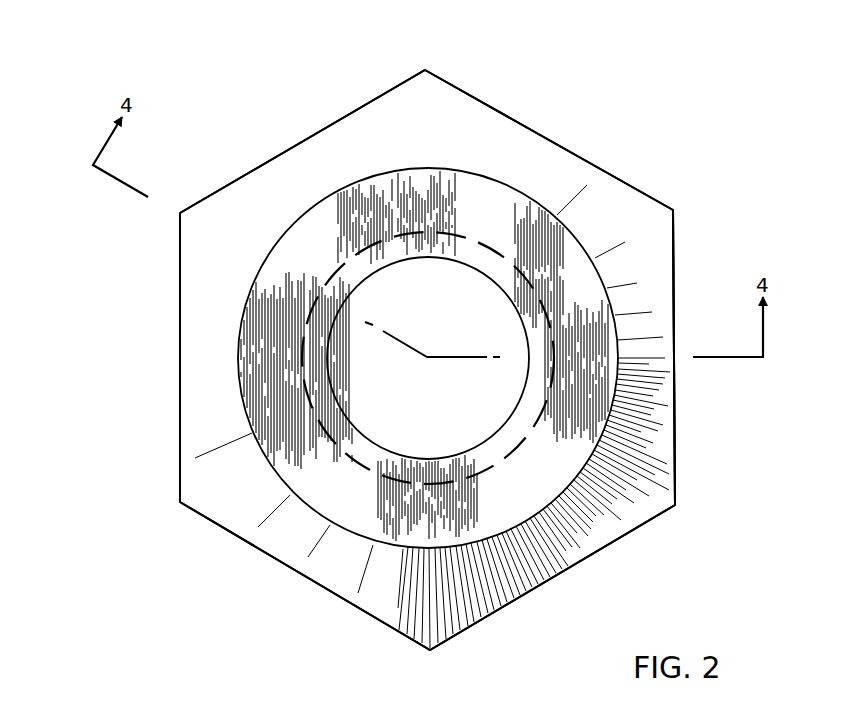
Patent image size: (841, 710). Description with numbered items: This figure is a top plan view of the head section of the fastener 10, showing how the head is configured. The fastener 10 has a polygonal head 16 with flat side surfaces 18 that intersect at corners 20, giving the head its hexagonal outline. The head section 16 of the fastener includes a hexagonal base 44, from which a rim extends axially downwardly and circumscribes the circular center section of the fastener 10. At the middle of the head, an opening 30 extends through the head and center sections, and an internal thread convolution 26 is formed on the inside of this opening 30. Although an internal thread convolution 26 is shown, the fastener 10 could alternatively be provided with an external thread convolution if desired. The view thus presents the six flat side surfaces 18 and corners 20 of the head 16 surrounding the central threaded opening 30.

The fastener 10 is at (672, 106).
The polygonal head 16 is at (665, 198).
The flat side surfaces 18 is at (318, 125).
The corners 20 is at (425, 70).
The internal thread convolution 26 is at (340, 405).
The opening 30 is at (448, 341).
The hexagonal base 44 is at (675, 265).